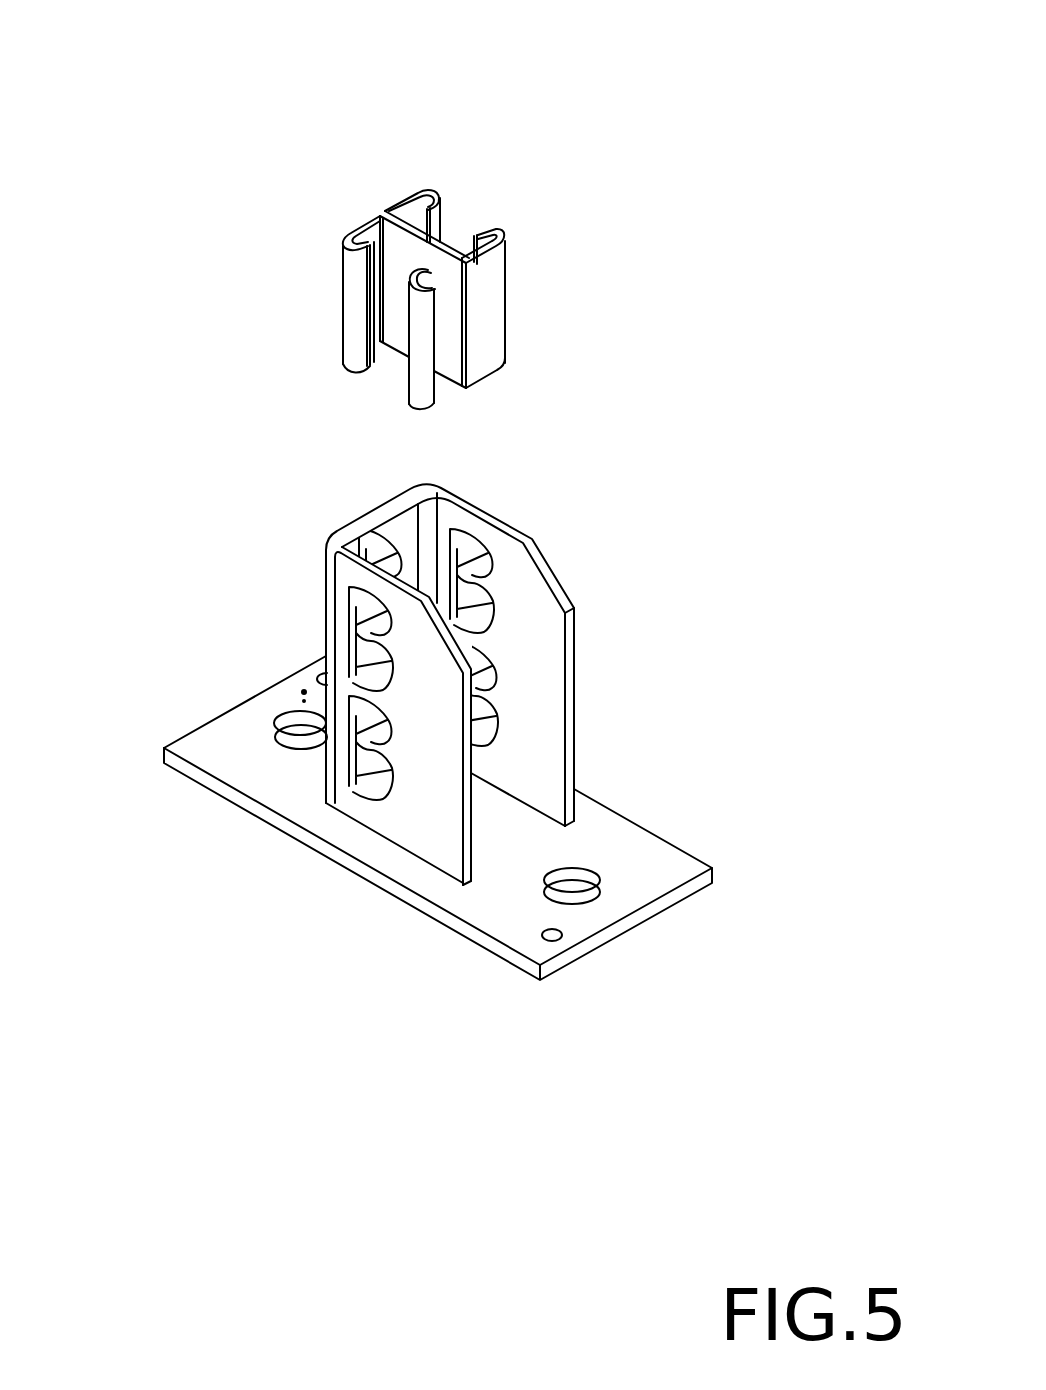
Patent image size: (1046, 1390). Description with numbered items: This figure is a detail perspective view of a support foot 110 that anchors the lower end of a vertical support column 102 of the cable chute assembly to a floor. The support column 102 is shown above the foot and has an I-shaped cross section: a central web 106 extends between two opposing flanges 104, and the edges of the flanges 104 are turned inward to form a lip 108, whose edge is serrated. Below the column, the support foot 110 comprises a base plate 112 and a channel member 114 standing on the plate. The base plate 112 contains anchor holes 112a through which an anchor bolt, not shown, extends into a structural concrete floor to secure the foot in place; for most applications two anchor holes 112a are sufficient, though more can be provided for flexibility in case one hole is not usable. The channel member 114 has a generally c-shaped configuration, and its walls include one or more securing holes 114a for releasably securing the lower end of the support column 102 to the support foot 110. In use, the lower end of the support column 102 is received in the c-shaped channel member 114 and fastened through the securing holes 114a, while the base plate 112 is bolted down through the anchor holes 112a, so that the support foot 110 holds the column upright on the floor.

The vertical support column 102 is at (449, 236).
The flange 104 is at (675, 353).
The central web 106 is at (440, 247).
The lip 108 is at (384, 204).
The support foot 110 is at (464, 808).
The base plate 112 is at (464, 815).
The anchor hole 112a is at (738, 683).
The channel member 114 is at (416, 669).
The securing hole 114a is at (265, 626).